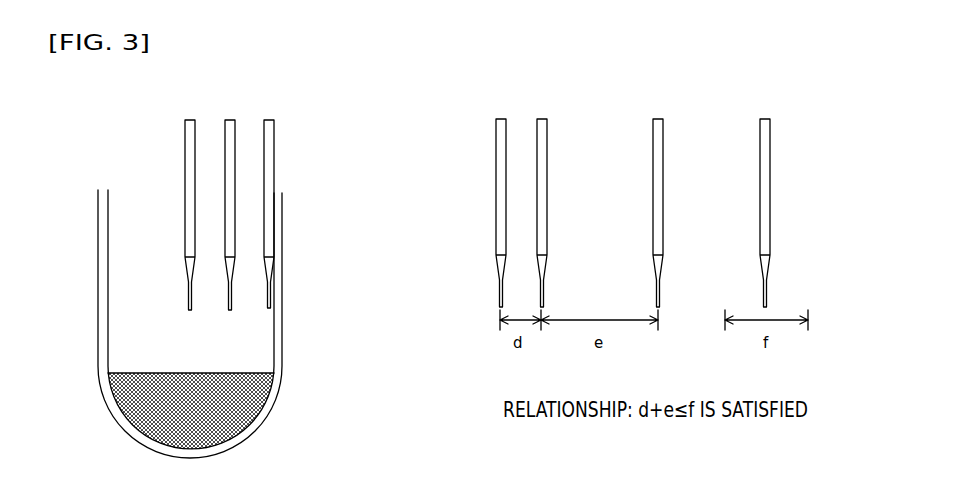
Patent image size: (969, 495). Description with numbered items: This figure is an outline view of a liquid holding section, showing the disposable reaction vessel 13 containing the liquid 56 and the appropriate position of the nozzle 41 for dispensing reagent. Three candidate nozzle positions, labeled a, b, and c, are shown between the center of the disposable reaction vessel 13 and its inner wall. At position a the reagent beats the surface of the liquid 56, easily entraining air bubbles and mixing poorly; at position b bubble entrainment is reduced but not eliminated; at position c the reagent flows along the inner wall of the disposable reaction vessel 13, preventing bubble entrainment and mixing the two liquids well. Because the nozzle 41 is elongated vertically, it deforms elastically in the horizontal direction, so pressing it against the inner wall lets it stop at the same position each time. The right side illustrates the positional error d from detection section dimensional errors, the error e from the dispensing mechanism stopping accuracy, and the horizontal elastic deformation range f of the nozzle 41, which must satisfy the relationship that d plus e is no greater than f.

The disposable reaction vessel 13 is at (283, 321).
The nozzle 41 is at (195, 187).
The liquid 56 is at (245, 412).